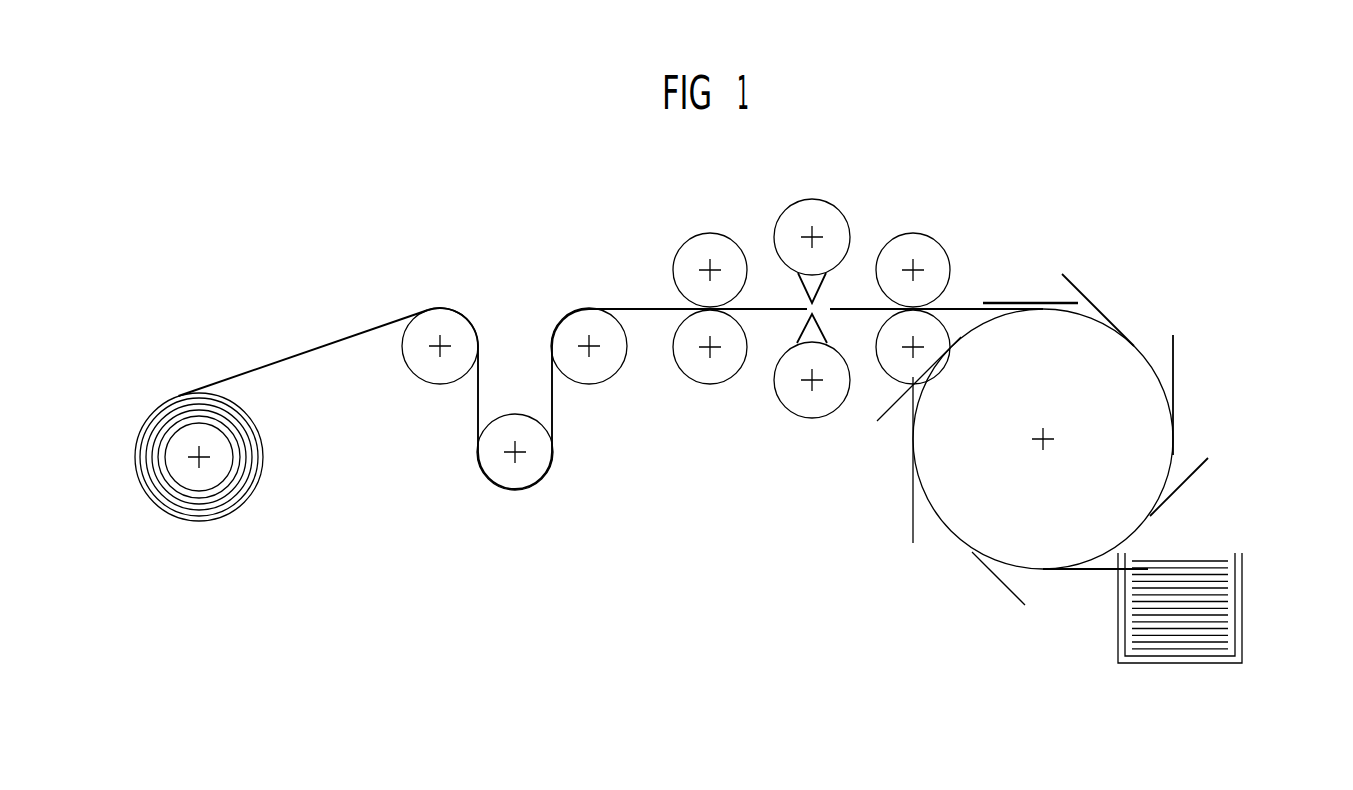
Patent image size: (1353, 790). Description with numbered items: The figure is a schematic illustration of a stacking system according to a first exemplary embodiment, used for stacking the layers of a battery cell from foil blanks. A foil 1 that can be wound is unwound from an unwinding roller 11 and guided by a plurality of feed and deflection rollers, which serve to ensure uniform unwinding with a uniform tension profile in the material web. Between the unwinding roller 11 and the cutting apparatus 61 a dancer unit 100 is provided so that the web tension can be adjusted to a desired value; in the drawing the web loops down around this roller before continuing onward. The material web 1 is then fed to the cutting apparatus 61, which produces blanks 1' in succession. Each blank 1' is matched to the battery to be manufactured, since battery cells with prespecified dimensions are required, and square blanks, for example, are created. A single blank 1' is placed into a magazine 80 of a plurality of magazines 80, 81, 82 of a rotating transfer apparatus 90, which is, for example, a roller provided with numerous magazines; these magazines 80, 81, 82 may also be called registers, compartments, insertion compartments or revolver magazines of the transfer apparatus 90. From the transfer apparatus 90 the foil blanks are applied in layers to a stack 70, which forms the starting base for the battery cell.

The foil 1 is at (664, 429).
The unwinding roller 11 is at (185, 476).
The dancer unit 100 is at (540, 453).
The cutting apparatus 61 is at (798, 284).
The blank 1' is at (1030, 271).
The rotating transfer apparatus 90 is at (1057, 387).
The magazine 80 is at (1080, 290).
The magazine 81 is at (1175, 352).
The magazine 82 is at (1200, 468).
The stack 70 is at (1242, 568).